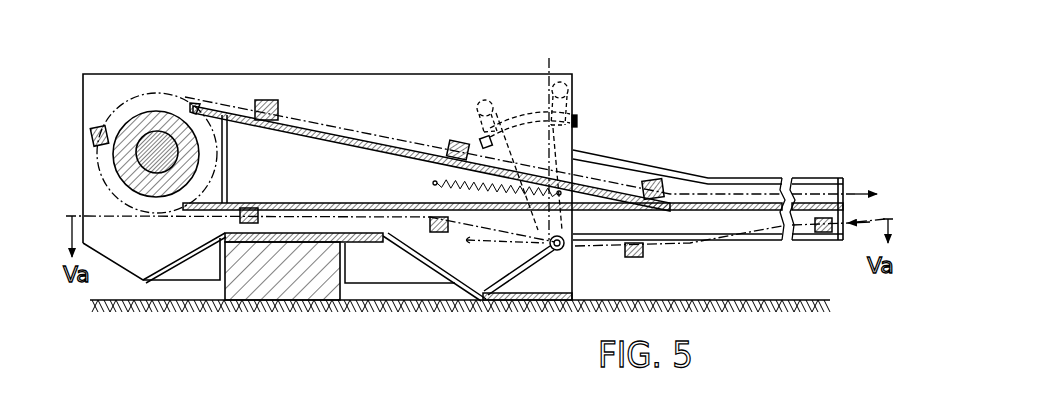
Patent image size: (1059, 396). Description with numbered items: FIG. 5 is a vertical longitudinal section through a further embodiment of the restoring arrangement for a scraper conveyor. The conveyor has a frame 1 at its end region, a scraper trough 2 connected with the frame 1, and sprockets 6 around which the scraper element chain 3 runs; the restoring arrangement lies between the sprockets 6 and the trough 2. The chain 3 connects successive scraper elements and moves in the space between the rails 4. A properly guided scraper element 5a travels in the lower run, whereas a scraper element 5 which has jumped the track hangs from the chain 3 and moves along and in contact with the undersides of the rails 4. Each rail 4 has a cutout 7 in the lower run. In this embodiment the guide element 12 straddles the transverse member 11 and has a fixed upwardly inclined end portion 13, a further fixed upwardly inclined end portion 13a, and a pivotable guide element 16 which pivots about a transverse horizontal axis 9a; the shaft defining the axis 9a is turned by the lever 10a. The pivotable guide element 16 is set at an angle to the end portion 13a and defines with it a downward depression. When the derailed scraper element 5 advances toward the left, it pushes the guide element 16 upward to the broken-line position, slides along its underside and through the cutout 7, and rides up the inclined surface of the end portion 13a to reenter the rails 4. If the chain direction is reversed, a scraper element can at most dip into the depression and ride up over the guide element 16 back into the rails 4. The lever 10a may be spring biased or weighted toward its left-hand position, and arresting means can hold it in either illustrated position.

The frame 1 is at (268, 98).
The scraper trough 2 is at (708, 188).
The scraper element chain 3 is at (605, 178).
The rails 4 is at (727, 225).
The scraper element 5 is at (634, 253).
The scraper element 5a is at (823, 232).
The sprockets 6 is at (160, 140).
The cutout 7 is at (458, 245).
The transverse horizontal axis 9a is at (565, 251).
The lever 10a is at (547, 125).
The transverse member 11 is at (327, 292).
The guide element 12 is at (277, 233).
The upwardly inclined end portion 13 is at (193, 262).
The upwardly inclined end portion 13a is at (403, 250).
The pivotable guide element 16 is at (540, 255).